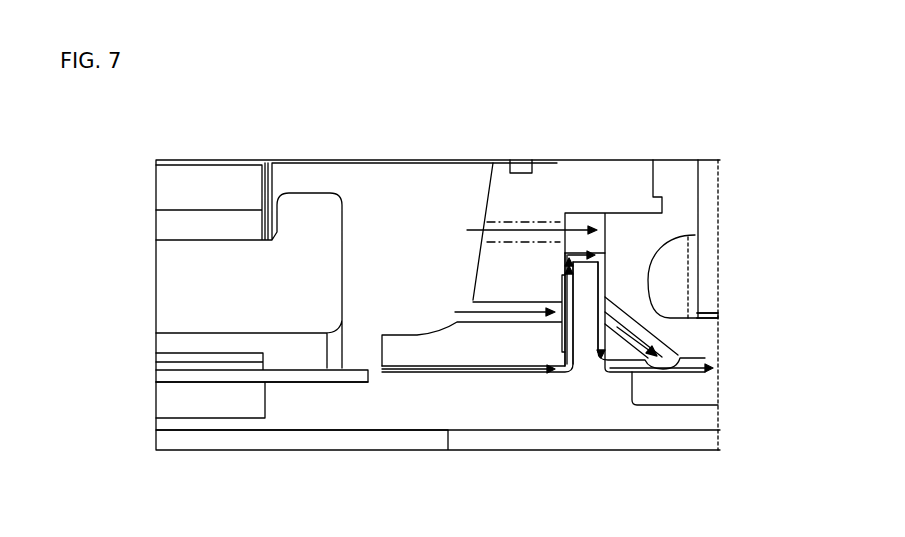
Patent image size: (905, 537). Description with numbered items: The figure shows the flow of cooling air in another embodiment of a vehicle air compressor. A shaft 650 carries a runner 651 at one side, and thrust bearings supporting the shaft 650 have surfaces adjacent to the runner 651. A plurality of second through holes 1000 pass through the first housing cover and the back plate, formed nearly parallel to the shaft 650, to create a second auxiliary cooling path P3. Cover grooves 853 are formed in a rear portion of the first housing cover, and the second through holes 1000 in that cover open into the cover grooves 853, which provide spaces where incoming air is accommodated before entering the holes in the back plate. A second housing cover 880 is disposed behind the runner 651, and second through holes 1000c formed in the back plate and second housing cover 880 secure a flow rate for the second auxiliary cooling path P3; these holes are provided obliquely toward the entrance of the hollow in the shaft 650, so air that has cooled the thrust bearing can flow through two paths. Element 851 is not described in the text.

The upper guide member 851 is at (546, 226).
The cover grooves 853 is at (565, 288).
The runner 651 is at (587, 275).
The second housing cover 880 is at (630, 298).
The second through holes 1000c is at (630, 340).
The second through holes 1000 is at (522, 313).
The shaft 650 is at (285, 407).
The second auxiliary cooling path P3 is at (460, 310).